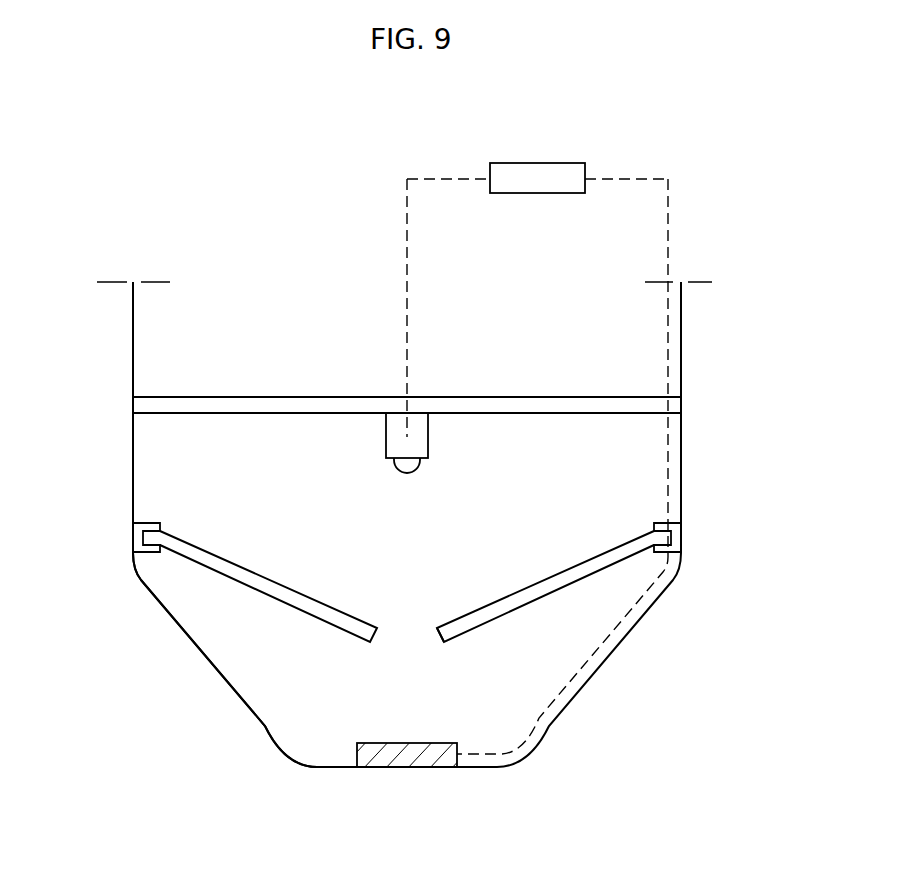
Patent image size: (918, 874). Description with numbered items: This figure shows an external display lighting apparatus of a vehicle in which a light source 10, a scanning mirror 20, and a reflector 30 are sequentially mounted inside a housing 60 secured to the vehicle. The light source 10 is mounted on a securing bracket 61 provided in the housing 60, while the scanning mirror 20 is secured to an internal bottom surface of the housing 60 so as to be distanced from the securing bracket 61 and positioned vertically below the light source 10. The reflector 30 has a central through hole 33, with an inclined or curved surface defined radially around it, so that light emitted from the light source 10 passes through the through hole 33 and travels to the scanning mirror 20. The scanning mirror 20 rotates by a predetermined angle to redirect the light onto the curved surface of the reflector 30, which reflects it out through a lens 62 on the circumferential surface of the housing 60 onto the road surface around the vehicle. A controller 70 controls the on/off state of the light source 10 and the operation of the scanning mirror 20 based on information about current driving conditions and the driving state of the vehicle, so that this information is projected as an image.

The light source 10 is at (410, 445).
The scanning mirror 20 is at (413, 757).
The reflector 30 is at (538, 600).
The through hole 33 is at (440, 632).
The housing 60 is at (131, 373).
The securing bracket 61 is at (290, 403).
The lens 62 is at (178, 627).
The controller 70 is at (536, 172).